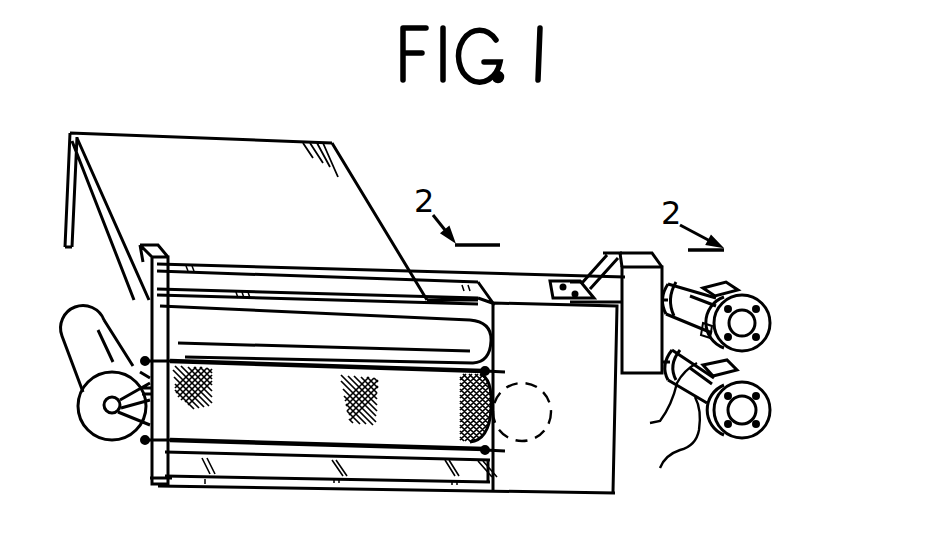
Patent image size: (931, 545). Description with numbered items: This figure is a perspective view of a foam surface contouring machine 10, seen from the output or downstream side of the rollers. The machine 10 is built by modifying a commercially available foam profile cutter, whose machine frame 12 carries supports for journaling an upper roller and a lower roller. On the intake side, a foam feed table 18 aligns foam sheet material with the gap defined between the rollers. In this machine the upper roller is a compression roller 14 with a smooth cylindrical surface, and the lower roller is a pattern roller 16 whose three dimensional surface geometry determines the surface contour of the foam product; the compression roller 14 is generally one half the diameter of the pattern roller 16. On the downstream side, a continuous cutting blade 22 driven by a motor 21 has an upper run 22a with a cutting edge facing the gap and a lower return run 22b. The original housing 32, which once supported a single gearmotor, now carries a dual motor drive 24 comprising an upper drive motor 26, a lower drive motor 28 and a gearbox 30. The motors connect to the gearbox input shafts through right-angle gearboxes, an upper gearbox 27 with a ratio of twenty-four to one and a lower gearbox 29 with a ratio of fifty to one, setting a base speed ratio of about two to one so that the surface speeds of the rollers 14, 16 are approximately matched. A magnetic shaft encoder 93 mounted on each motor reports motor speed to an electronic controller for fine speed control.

The foam surface contouring machine 10 is at (474, 162).
The machine frame 12 is at (157, 266).
The compression roller 14 is at (283, 338).
The pattern roller 16 is at (423, 423).
The foam feed table 18 is at (333, 172).
The motor 21 is at (108, 305).
The blade 22 is at (472, 370).
The upper run 22a is at (298, 373).
The lower return run 22b is at (272, 442).
The dual motor drive 24 is at (618, 184).
The upper drive motor 26 is at (735, 290).
The upper gearbox 27 is at (661, 262).
The lower drive motor 28 is at (735, 375).
The lower gearbox 29 is at (668, 322).
The gearbox 30 is at (632, 330).
The housing 32 is at (572, 470).
The magnetic shaft encoder 93 is at (766, 328).